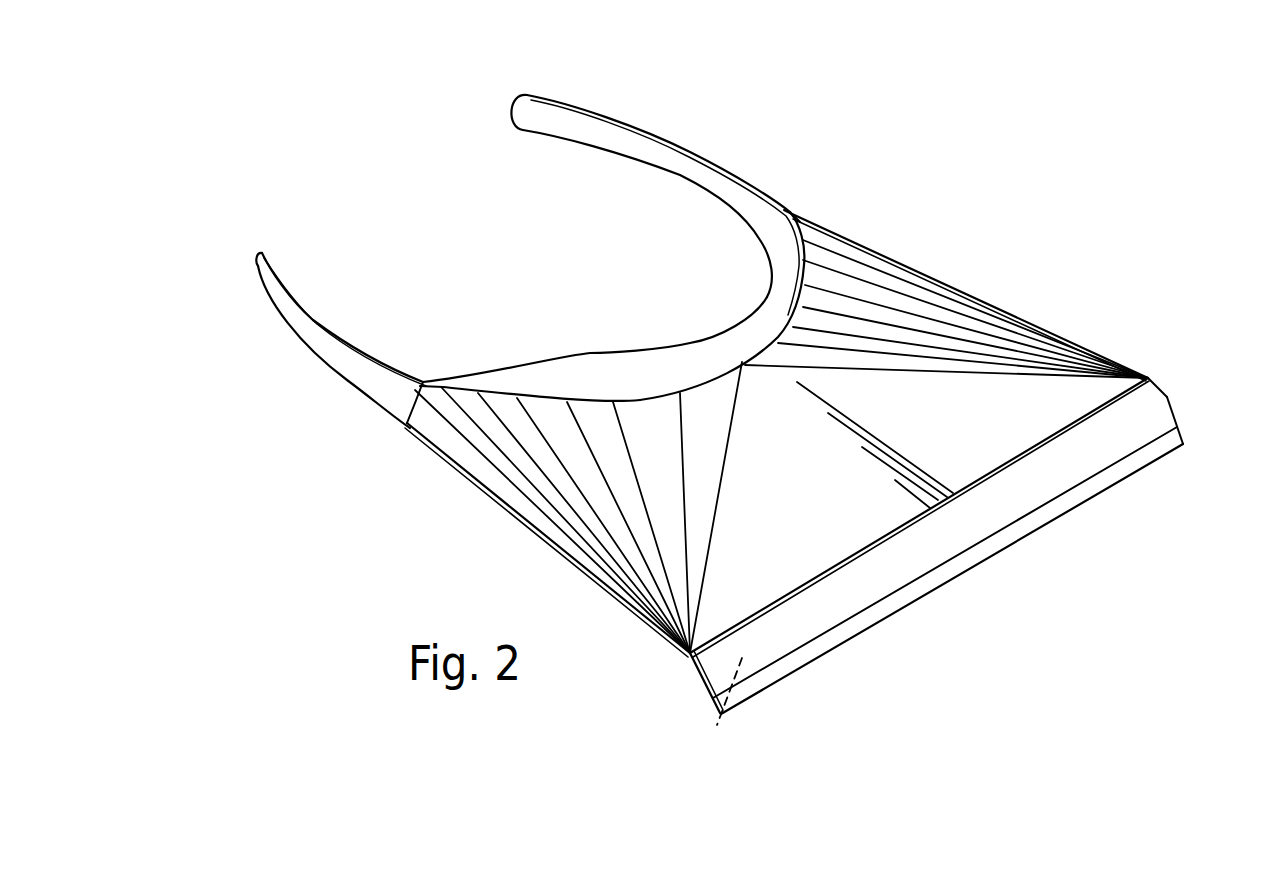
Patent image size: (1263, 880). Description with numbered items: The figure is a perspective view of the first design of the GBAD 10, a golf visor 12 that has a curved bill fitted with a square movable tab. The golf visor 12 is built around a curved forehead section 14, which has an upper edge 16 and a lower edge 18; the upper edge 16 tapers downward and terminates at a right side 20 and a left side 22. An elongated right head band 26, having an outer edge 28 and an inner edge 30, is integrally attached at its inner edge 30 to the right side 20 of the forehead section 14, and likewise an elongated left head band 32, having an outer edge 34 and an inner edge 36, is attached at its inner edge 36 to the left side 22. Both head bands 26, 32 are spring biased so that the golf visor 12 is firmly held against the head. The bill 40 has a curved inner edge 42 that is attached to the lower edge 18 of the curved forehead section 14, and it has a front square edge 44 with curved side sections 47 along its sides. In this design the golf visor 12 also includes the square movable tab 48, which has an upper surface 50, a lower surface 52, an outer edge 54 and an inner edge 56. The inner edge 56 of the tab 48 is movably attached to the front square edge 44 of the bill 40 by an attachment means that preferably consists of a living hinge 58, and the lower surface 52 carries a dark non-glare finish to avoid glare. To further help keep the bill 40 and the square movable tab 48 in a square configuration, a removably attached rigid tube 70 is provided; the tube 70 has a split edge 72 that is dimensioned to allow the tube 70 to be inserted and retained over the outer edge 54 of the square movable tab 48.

The GBAD 10 is at (1027, 103).
The golf visor 12 is at (798, 474).
The curved forehead section 14 is at (793, 290).
The upper edge 16 is at (792, 207).
The lower edge 18 is at (573, 402).
The right side 20 is at (502, 383).
The left side 22 is at (798, 217).
The elongated right head band 26 is at (353, 372).
The outer edge 28 is at (260, 253).
The inner edge 30 is at (412, 405).
The elongated left head band 32 is at (653, 150).
The outer edge 34 is at (520, 103).
The inner edge 36 is at (758, 253).
The bill 40 is at (960, 335).
The curved inner edge 42 is at (935, 285).
The front square edge 44 is at (1153, 380).
The curved side sections 47 is at (587, 578).
The square movable tab 48 is at (1168, 399).
The upper surface 50 is at (710, 667).
The lower surface 52 is at (716, 724).
The outer edge 54 is at (775, 665).
The inner edge 56 is at (665, 633).
The living hinge 58 is at (1030, 443).
The rigid tube 70 is at (918, 587).
The split edge 72 is at (977, 560).